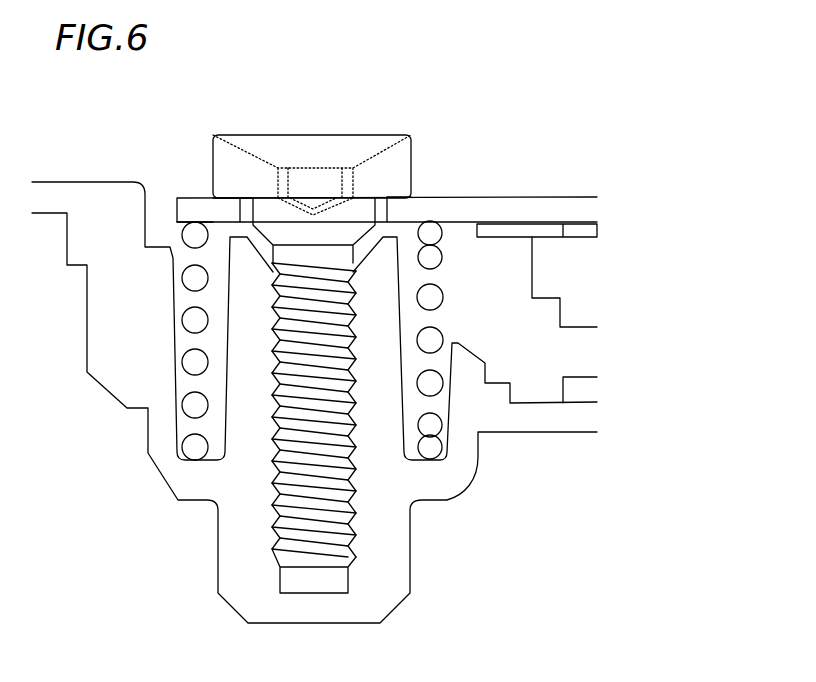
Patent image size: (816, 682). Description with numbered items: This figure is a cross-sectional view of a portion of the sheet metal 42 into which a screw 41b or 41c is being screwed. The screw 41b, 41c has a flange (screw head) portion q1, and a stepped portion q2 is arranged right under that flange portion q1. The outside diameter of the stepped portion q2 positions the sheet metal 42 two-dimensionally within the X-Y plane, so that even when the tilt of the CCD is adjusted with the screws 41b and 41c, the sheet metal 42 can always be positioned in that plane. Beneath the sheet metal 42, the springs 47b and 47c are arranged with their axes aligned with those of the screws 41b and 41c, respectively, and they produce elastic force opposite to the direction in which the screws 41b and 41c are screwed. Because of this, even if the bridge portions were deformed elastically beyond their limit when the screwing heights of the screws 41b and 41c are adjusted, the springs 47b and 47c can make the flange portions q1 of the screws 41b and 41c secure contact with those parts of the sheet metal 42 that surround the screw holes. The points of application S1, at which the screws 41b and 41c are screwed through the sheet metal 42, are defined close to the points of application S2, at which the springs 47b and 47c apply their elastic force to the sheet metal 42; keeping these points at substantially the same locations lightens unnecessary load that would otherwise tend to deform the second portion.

The sheet metal 42 is at (488, 210).
The screw 41b is at (313, 335).
The screw 41c is at (347, 137).
The spring 47b is at (229, 373).
The spring 47c is at (192, 448).
The point of application S1 is at (230, 197).
The point of application S2 is at (195, 222).
The flange portion q1 is at (411, 162).
The stepped portion q2 is at (252, 222).